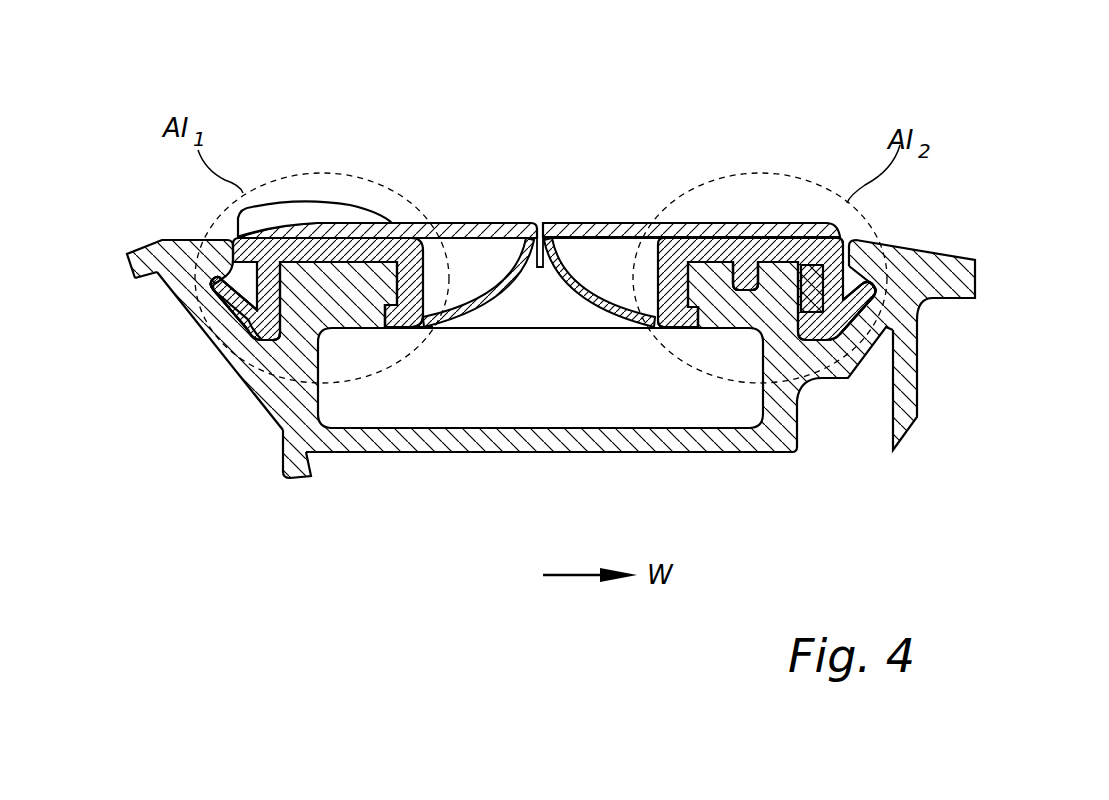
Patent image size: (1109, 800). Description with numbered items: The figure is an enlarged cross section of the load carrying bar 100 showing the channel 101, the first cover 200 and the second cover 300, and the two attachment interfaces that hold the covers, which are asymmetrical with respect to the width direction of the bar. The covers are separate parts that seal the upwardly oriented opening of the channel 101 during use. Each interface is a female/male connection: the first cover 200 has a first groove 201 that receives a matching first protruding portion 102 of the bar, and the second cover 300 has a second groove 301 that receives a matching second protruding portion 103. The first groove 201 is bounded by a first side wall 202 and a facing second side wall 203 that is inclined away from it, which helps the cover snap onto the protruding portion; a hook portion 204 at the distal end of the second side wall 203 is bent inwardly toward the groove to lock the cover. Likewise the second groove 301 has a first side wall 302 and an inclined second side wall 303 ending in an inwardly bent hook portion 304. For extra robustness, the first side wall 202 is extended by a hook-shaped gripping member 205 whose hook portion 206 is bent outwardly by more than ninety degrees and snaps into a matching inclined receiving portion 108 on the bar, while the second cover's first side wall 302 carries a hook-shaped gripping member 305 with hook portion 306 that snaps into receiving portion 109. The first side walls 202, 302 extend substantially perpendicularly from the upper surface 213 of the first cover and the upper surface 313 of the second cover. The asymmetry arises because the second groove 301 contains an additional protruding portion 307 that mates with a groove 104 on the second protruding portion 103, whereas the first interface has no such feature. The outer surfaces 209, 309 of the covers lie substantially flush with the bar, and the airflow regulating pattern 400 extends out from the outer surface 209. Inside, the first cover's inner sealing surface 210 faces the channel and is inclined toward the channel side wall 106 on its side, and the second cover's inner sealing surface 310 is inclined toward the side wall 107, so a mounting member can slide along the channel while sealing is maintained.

The load carrying bar 100 is at (653, 170).
The channel 101 is at (463, 410).
The first protruding portion 102 is at (317, 303).
The second protruding portion 103 is at (788, 350).
The groove 104 is at (745, 300).
The side wall of the channel 106 is at (313, 410).
The side wall of the channel 107 is at (770, 380).
The receiving portion 108 is at (215, 315).
The receiving portion 109 is at (888, 327).
The first cover 200 is at (480, 220).
The first groove 201 is at (307, 237).
The first side wall 202 is at (250, 342).
The second side wall 203 is at (423, 237).
The hook portion 204 is at (400, 328).
The hook-shaped gripping member 205 is at (220, 293).
The hook portion 206 is at (234, 303).
The outer surface 209 is at (503, 222).
The inner sealing surface 210 is at (491, 310).
The upper surface 213 is at (357, 223).
The second cover 300 is at (568, 220).
The second groove 301 is at (758, 238).
The first side wall 302 is at (873, 237).
The second side wall 303 is at (693, 240).
The hook portion 304 is at (683, 330).
The hook-shaped gripping member 305 is at (866, 335).
The hook portion 306 is at (858, 308).
The protruding portion 307 is at (760, 262).
The outer surface 309 is at (607, 222).
The inner sealing surface 310 is at (603, 305).
The upper surface 313 is at (808, 262).
The airflow regulating pattern 400 is at (290, 203).